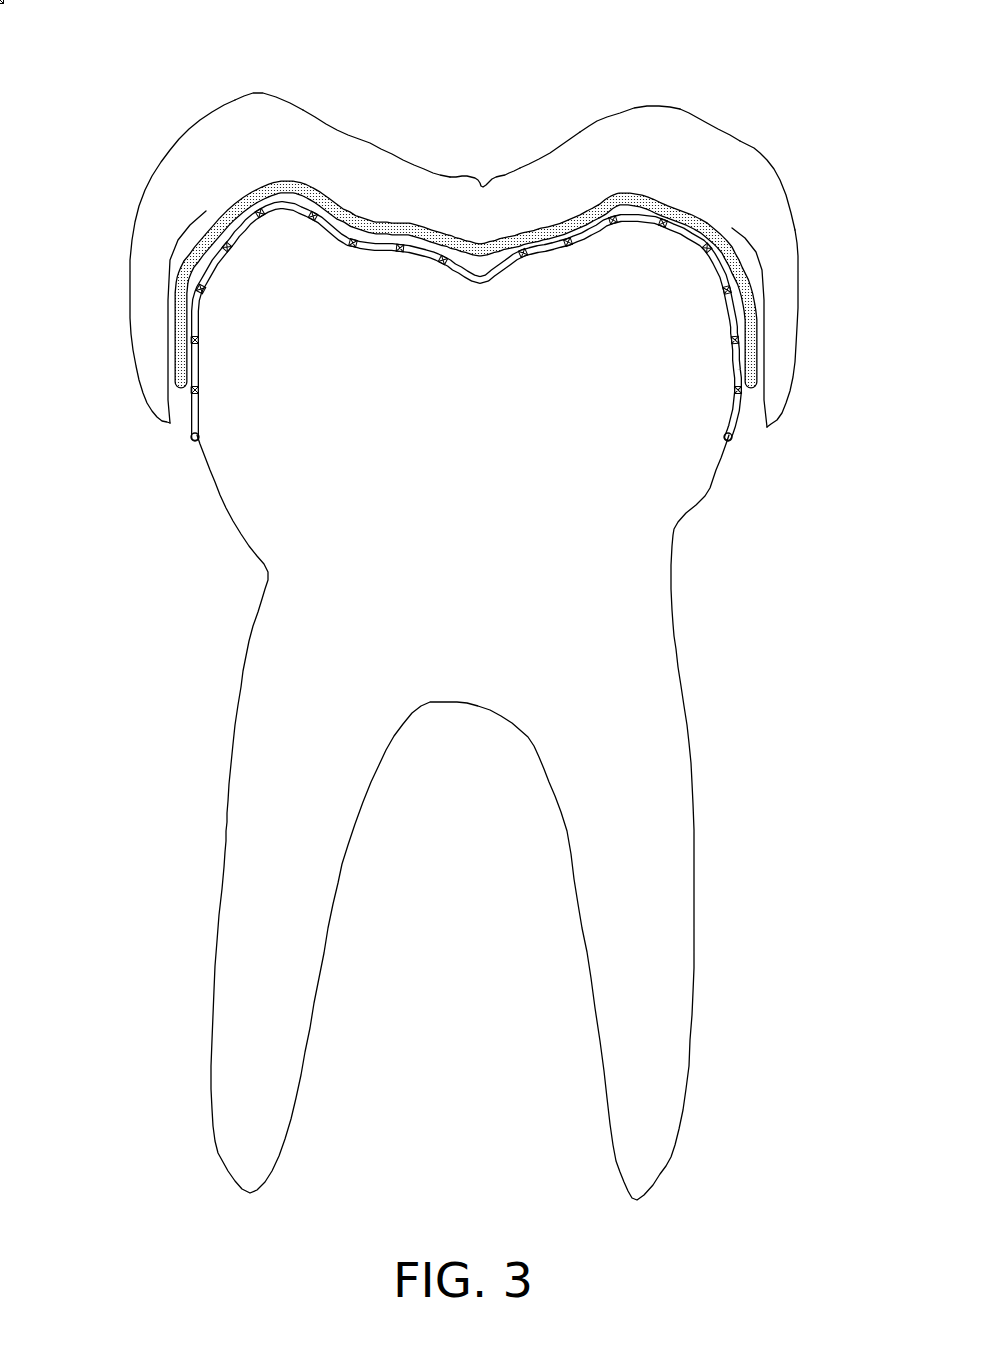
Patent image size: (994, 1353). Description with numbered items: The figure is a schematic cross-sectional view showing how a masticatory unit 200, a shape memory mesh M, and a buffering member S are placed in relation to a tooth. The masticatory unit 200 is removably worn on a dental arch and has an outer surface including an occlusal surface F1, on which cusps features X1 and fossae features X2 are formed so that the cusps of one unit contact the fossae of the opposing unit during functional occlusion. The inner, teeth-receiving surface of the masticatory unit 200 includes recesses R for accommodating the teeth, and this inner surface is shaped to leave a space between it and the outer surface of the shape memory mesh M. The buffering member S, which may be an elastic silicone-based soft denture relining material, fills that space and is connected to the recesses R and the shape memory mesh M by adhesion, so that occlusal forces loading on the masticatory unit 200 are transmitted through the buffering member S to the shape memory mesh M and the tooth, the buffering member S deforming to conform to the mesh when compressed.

The masticatory unit 200 is at (655, 150).
The cusps feature X1 is at (265, 93).
The fossae feature X2 is at (482, 185).
The occlusal surface F1 is at (760, 152).
The recess R is at (218, 237).
The buffering member S is at (743, 303).
The shape memory mesh M is at (191, 437).